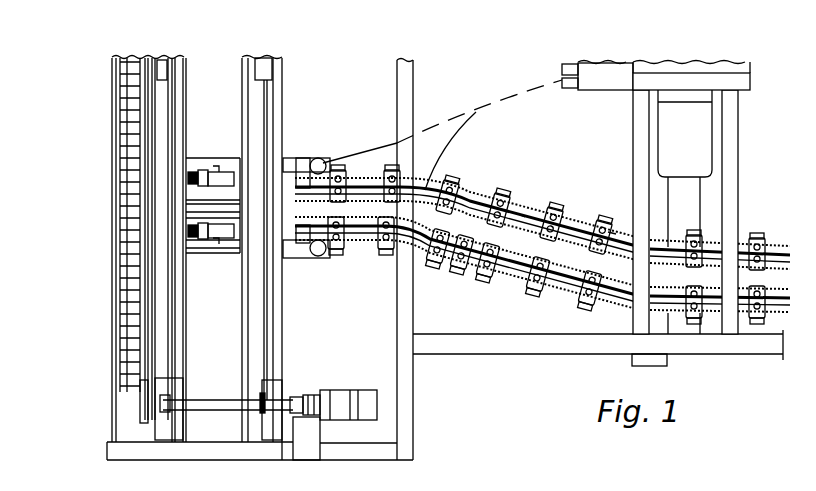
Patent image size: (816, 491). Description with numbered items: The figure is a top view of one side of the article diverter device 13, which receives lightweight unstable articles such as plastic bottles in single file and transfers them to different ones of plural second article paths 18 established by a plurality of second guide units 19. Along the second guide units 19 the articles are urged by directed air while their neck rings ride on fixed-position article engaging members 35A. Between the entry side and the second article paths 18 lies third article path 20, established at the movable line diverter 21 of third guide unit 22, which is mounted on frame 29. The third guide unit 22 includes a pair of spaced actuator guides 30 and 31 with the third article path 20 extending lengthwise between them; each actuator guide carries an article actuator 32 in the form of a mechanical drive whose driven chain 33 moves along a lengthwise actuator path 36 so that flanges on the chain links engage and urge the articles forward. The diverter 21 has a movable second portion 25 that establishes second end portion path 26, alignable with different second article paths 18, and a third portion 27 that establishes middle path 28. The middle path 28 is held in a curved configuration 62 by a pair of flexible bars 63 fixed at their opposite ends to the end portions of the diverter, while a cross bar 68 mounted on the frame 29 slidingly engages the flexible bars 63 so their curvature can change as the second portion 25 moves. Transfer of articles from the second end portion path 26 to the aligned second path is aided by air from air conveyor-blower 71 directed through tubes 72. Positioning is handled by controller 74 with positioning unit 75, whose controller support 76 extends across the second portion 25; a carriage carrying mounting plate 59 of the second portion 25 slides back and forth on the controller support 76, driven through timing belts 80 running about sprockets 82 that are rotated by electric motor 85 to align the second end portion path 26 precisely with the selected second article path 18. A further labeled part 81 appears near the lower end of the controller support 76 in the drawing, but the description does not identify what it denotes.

The device 13 is at (324, 73).
The second article paths 18 is at (118, 209).
The second guide units 19 is at (110, 190).
The third article path 20 is at (505, 264).
The diverter 21 is at (492, 190).
The third guide unit 22 is at (539, 179).
The second portion 25 is at (196, 226).
The second end portion path 26 is at (230, 182).
The third portion 27 is at (612, 230).
The middle path 28 is at (590, 202).
The frame 29 is at (430, 343).
The actuator guide 30 is at (393, 178).
The actuator guide 31 is at (390, 255).
The article actuator 32 is at (478, 183).
The driven chain 33 is at (537, 210).
The article engaging members 35A is at (120, 101).
The actuator path 36 is at (677, 247).
The mounting plate 59 is at (229, 250).
The curved configuration 62 is at (610, 268).
The flexible bars 63 is at (437, 182).
The cross bar 68 is at (657, 364).
The air conveyor-blower 71 is at (615, 85).
The tubes 72 is at (318, 158).
The controller 74 is at (240, 430).
The positioning unit 75 is at (258, 313).
The controller support 76 is at (158, 92).
The timing belts 80 is at (145, 368).
The foot piece 81 is at (128, 395).
The sprockets 82 is at (283, 413).
The electric motor 85 is at (358, 390).